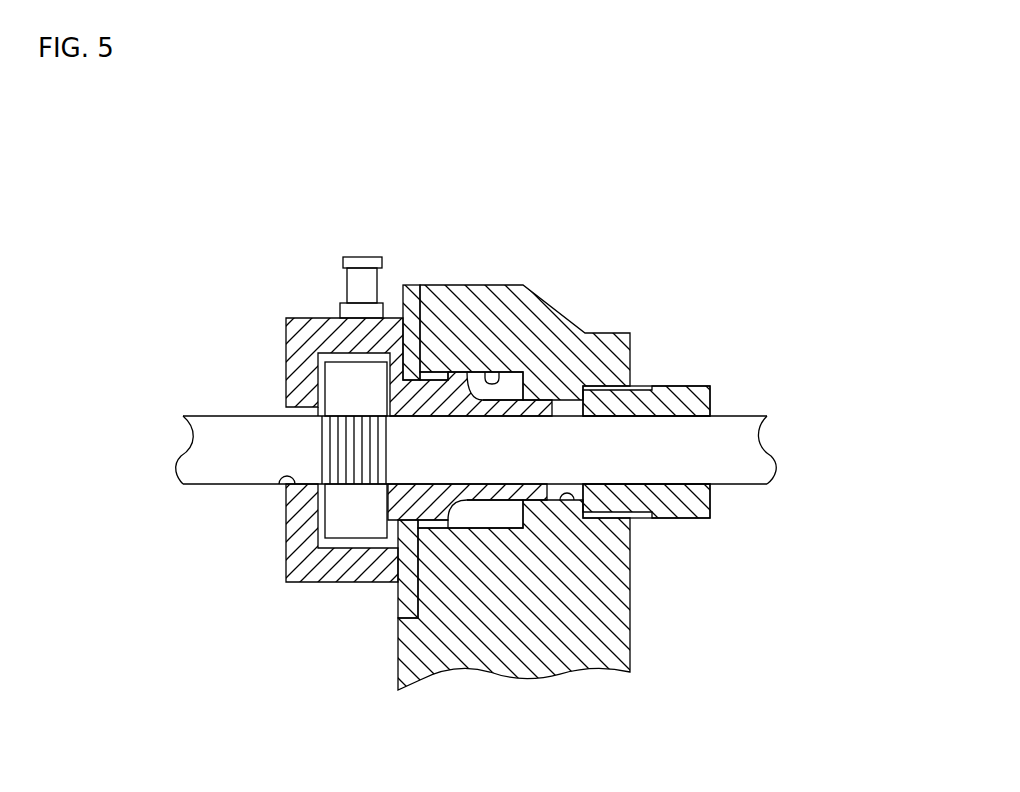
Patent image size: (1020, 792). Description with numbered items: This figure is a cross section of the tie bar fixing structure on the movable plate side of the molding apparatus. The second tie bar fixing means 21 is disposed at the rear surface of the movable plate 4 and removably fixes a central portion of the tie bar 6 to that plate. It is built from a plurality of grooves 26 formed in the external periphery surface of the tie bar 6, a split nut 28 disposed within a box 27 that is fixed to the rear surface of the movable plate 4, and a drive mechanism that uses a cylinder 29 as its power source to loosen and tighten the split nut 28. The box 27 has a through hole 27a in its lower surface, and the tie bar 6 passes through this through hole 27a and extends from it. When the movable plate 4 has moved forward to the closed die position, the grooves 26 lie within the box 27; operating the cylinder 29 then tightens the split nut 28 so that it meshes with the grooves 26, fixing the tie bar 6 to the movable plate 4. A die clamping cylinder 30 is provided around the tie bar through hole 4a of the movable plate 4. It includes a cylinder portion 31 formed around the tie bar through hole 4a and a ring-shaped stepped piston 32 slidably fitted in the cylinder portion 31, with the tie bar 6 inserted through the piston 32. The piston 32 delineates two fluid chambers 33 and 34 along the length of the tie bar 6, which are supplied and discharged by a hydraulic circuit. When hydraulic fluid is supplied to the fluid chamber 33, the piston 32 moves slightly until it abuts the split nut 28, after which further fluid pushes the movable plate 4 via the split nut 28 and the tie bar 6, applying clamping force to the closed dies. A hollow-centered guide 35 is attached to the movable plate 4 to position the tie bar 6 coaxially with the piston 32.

The movable plate 4 is at (564, 479).
The tie bar through hole 4a is at (562, 500).
The tie bar 6 is at (750, 437).
The second tie bar fixing means 21 is at (354, 443).
The grooves 26 is at (350, 503).
The box 27 is at (293, 388).
The through hole 27a is at (282, 481).
The split nut 28 is at (335, 513).
The cylinder 29 is at (362, 278).
The die clamping cylinder 30 is at (513, 380).
The cylinder portion 31 is at (497, 380).
The stepped piston 32 is at (457, 378).
The fluid chamber 33 is at (497, 520).
The fluid chamber 34 is at (433, 526).
The hollow-centered guide 35 is at (683, 387).